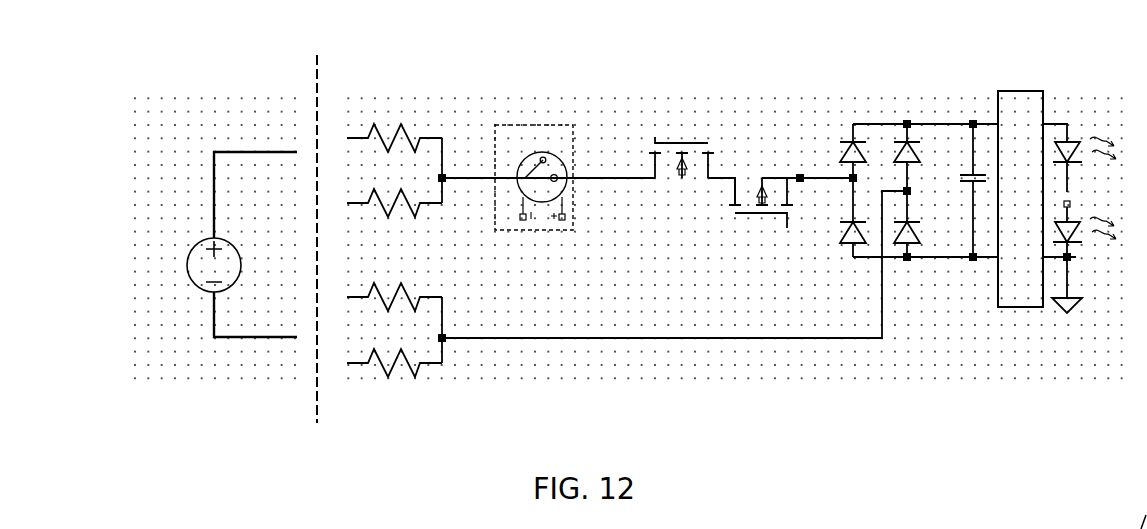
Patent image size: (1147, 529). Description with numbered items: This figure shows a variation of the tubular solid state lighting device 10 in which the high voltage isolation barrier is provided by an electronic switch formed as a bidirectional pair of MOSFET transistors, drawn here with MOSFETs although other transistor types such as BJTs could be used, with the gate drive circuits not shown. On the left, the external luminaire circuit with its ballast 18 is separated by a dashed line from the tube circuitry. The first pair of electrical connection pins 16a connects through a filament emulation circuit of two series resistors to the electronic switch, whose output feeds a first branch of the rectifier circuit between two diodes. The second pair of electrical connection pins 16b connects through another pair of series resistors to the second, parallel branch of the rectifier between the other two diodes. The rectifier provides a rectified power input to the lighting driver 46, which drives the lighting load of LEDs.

The tubular solid state lighting device 10 is at (724, 239).
The first pair of electrical connection pins 16a is at (367, 113).
The second pair of electrical connection pins 16b is at (405, 379).
The ballast 18 is at (200, 313).
The lighting driver 46 is at (1013, 91).